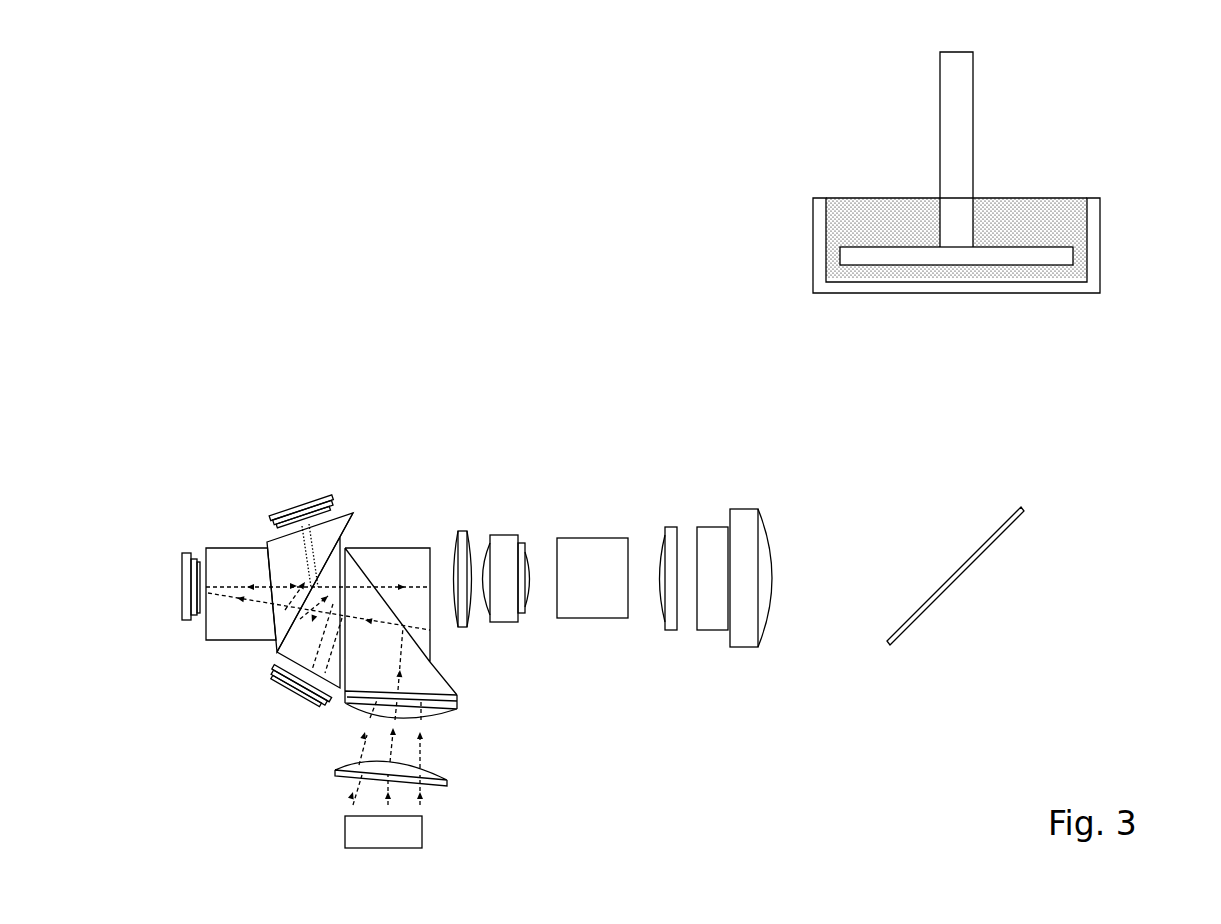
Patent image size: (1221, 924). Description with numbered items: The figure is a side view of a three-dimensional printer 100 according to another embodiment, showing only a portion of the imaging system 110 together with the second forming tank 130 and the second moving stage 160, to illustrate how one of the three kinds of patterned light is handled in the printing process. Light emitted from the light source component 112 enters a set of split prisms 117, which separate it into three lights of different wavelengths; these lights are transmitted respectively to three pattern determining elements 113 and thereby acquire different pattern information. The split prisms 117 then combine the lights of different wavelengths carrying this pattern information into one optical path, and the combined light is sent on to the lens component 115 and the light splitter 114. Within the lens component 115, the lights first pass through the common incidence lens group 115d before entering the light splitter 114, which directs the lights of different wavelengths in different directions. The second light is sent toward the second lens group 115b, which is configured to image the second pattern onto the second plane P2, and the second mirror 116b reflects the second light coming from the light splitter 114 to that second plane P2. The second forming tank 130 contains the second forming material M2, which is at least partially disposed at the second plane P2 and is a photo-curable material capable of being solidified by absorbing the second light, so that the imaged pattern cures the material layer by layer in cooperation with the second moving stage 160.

The three-dimensional printer 100 is at (254, 186).
The imaging system 110 is at (1075, 432).
The light source component 112 is at (410, 833).
The pattern determining element 113 is at (192, 577).
The light splitter 114 is at (593, 608).
The lens component 115 is at (742, 450).
The common incidence lens group 115d is at (528, 498).
The second lens group 115b is at (770, 498).
The second mirror 116b is at (1021, 510).
The split prism 117 is at (227, 632).
The second forming tank 130 is at (1092, 244).
The second moving stage 160 is at (957, 106).
The second forming material M2 is at (1068, 222).
The second plane P2 is at (1035, 268).